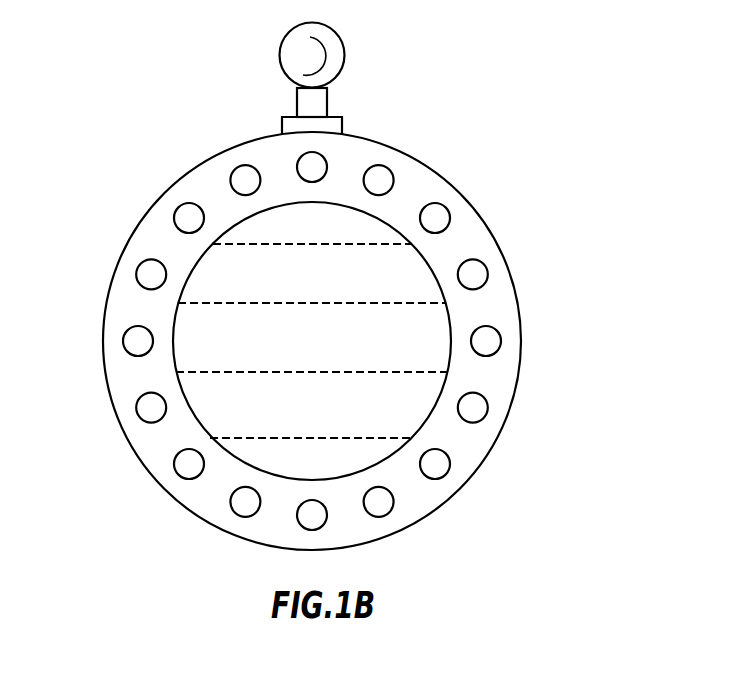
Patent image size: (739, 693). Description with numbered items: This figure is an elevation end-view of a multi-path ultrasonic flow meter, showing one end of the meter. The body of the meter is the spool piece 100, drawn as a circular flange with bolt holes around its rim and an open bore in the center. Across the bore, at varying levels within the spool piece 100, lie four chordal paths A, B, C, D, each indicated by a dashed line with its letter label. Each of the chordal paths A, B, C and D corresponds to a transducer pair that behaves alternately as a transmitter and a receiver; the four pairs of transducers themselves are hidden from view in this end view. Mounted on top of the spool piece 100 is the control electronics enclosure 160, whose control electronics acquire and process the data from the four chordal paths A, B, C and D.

The spool piece 100 is at (350, 341).
The control electronics enclosure 160 is at (348, 60).
The chordal path A is at (312, 227).
The chordal path B is at (312, 289).
The chordal path C is at (312, 359).
The chordal path D is at (312, 424).